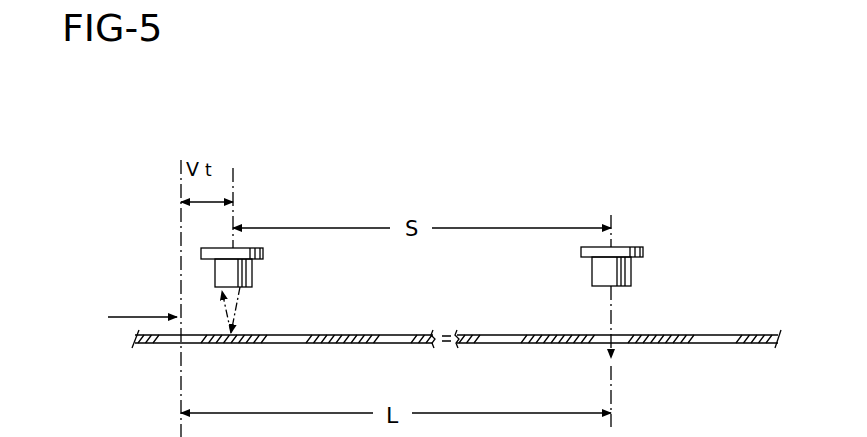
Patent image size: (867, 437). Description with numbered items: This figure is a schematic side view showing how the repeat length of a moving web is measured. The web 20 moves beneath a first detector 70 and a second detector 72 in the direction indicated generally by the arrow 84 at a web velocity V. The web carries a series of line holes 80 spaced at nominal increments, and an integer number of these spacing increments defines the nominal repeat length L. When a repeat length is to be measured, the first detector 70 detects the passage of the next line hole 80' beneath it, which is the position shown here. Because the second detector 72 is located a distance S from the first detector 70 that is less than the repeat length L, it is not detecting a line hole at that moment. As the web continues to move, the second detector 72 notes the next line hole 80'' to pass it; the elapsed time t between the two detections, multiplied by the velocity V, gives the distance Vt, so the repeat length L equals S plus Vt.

The web 20 is at (135, 339).
The first detector 70 is at (631, 265).
The second detector 72 is at (263, 270).
The line hole 80 is at (398, 307).
The line hole 80' is at (696, 312).
The line hole 80'' is at (135, 377).
The arrow 84 is at (143, 317).